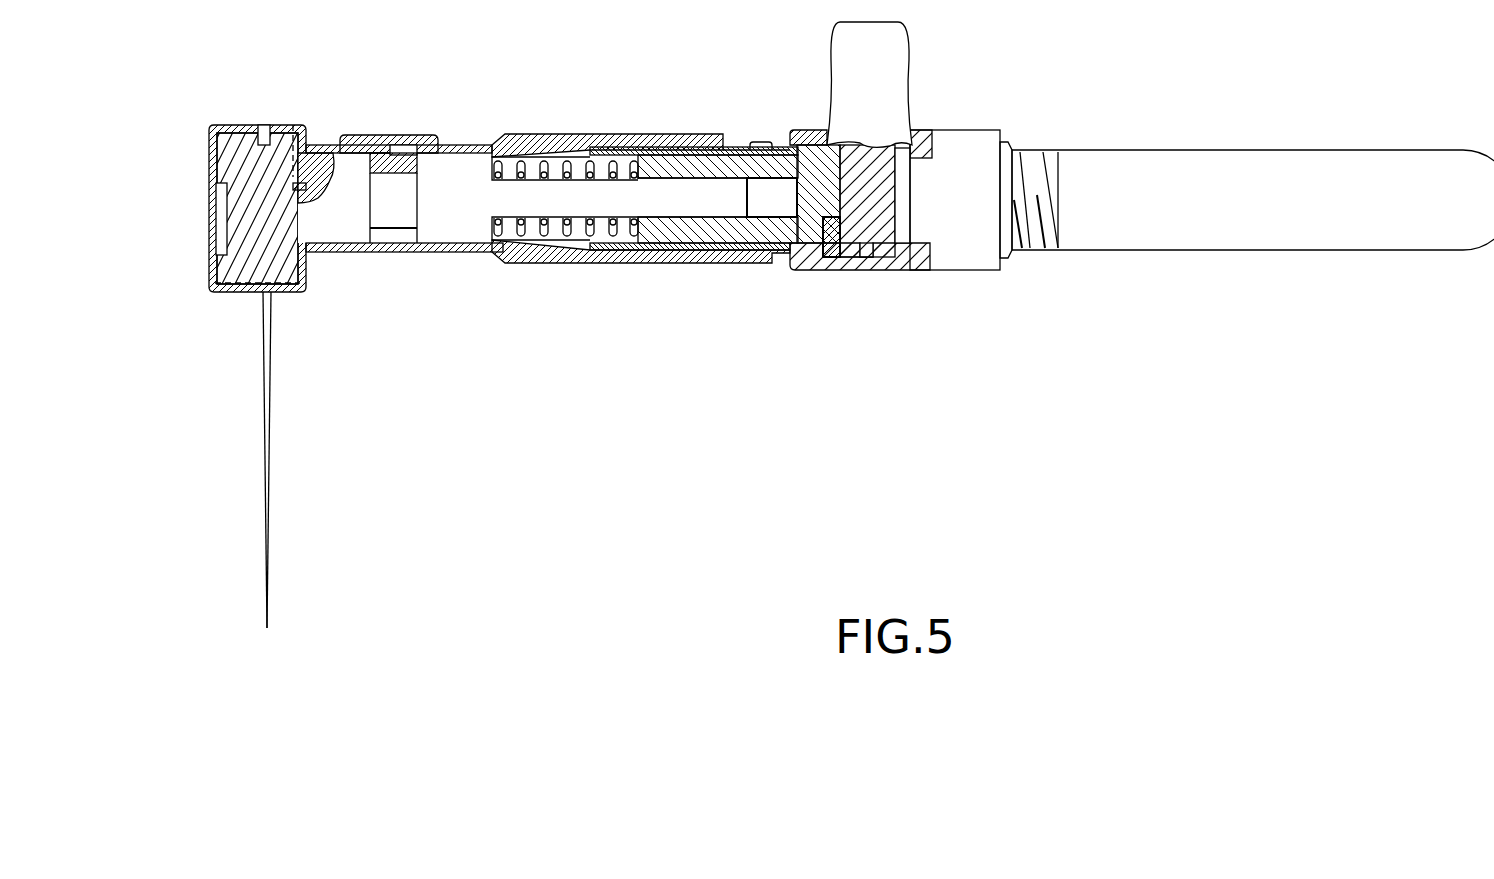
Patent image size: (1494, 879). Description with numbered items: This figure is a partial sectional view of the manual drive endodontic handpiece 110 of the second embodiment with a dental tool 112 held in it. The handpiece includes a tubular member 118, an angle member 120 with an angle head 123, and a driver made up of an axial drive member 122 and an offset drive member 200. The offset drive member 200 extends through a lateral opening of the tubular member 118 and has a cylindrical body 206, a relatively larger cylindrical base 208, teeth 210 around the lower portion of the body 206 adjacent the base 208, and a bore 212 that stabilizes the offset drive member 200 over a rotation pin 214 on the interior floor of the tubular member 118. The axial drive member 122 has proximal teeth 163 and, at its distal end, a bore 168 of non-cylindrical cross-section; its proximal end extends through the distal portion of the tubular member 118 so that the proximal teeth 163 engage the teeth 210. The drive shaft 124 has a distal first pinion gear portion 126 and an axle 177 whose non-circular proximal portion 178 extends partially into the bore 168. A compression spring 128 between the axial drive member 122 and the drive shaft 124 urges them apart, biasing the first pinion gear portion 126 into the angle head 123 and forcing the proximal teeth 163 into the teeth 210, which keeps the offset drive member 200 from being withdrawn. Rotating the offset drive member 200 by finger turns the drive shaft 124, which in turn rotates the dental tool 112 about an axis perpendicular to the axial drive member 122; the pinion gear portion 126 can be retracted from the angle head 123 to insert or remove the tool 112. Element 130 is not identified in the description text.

The endodontic handpiece 110 is at (628, 410).
The dental tool 112 is at (247, 270).
The tubular member 118 is at (799, 138).
The angle member 120 is at (512, 137).
The axial drive member 122 is at (684, 165).
The angle head 123 is at (210, 133).
The drive shaft 124 is at (488, 200).
The first pinion gear portion 126 is at (345, 175).
The compression spring 128 is at (546, 165).
The elastomeric seal 130 is at (283, 148).
The proximal teeth 163 is at (839, 207).
The bore 168 is at (773, 200).
The axle 177 is at (573, 200).
The proximal portion 178 is at (714, 199).
The offset drive member 200 is at (909, 58).
The cylindrical body 206 is at (880, 200).
The cylindrical base 208 is at (903, 233).
The teeth 210 is at (804, 255).
The bore 212 is at (847, 257).
The rotation pin 214 is at (868, 258).